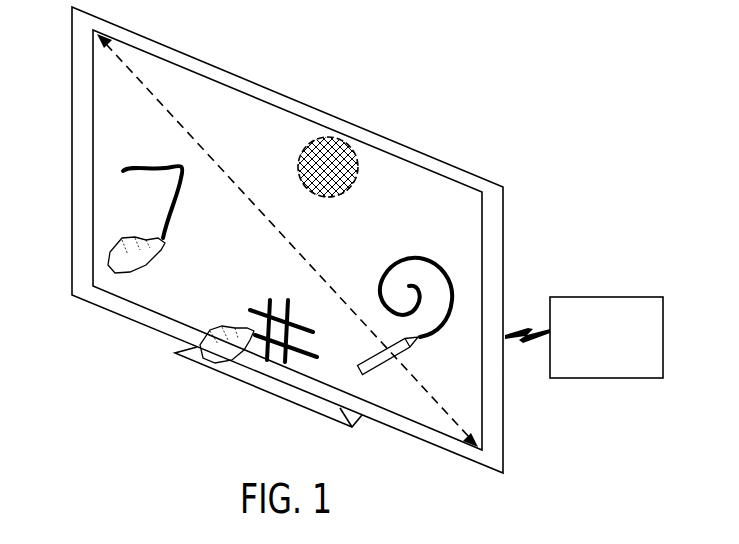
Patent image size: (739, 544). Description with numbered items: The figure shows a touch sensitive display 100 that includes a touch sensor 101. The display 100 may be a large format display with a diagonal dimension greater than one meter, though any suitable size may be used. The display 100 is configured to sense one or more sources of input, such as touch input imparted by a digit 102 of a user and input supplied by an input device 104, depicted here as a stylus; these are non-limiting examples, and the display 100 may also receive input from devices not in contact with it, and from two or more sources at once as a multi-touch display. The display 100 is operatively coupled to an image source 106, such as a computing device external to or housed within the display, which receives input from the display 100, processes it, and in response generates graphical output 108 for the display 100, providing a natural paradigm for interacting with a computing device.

The touch sensitive display 100 is at (340, 45).
The touch sensor 101 is at (350, 146).
The digit 102 is at (165, 249).
The input device 104 is at (363, 373).
The image source 106 is at (593, 371).
The graphical output 108 is at (162, 165).